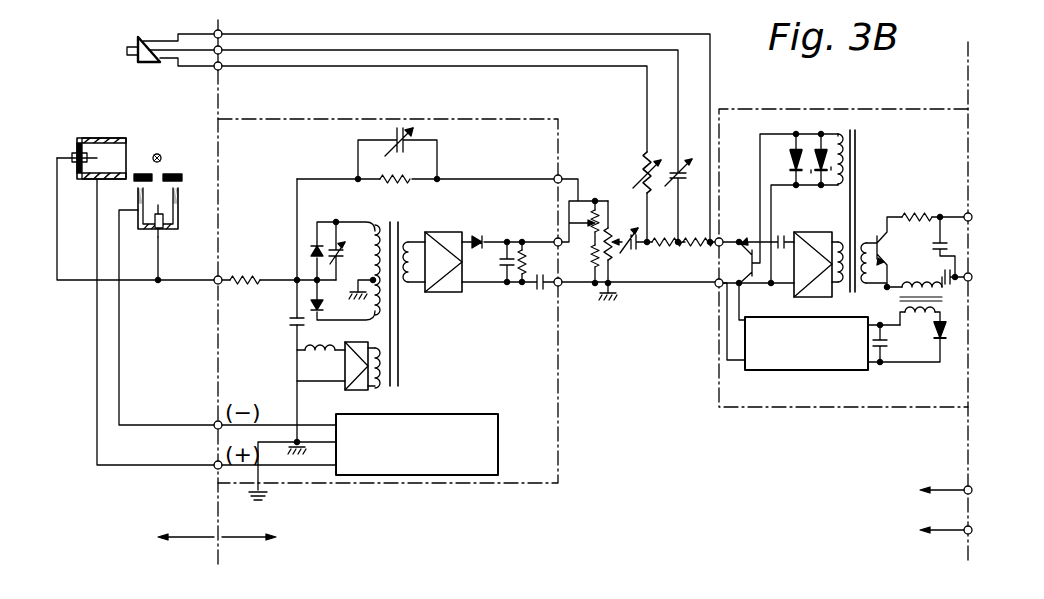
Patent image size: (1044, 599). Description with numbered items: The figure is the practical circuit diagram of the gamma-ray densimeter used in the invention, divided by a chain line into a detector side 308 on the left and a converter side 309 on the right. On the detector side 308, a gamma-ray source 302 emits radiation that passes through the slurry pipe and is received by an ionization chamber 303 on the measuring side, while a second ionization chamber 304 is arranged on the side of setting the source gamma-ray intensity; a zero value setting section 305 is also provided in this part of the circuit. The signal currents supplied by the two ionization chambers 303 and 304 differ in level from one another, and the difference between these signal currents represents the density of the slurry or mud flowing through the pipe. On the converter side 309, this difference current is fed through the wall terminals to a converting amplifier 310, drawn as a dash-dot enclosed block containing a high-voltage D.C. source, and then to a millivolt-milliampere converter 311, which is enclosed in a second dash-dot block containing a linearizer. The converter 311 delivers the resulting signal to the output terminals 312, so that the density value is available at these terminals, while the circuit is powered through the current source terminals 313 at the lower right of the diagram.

The gamma-ray source 302 is at (156, 153).
The ionization chamber 303 is at (96, 137).
The ionization chamber 304 is at (178, 226).
The zero value setting section 305 is at (173, 173).
The detector side 308 is at (183, 558).
The converter side 309 is at (249, 558).
The converting amplifier 310 is at (534, 486).
The millivolt-milliampere converter 311 is at (733, 408).
The output terminals 312 is at (990, 247).
The current source terminals 313 is at (967, 510).